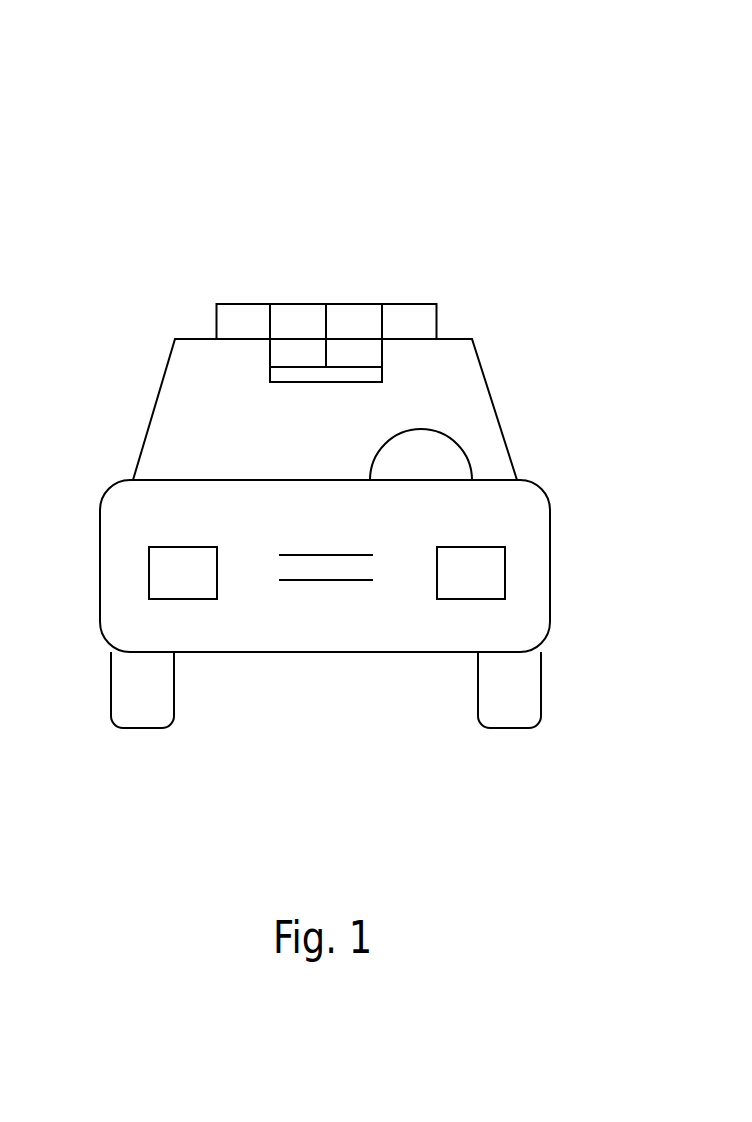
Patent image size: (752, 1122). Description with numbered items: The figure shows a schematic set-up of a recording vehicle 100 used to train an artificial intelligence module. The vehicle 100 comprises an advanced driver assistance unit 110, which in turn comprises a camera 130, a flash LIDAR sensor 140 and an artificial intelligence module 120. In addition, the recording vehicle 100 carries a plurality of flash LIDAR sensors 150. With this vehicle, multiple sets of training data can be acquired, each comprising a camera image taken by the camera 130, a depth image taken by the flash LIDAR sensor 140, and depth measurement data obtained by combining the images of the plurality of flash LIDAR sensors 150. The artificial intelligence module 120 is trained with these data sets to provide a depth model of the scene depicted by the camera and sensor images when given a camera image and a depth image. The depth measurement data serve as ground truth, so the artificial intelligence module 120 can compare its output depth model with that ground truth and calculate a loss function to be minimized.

The recording vehicle 100 is at (113, 112).
The advanced driver assistance unit 110 is at (322, 274).
The artificial intelligence module 120 is at (332, 373).
The camera 130 is at (296, 351).
The flash LIDAR sensor 140 is at (352, 354).
The plurality of flash LIDAR sensors 150 is at (356, 296).